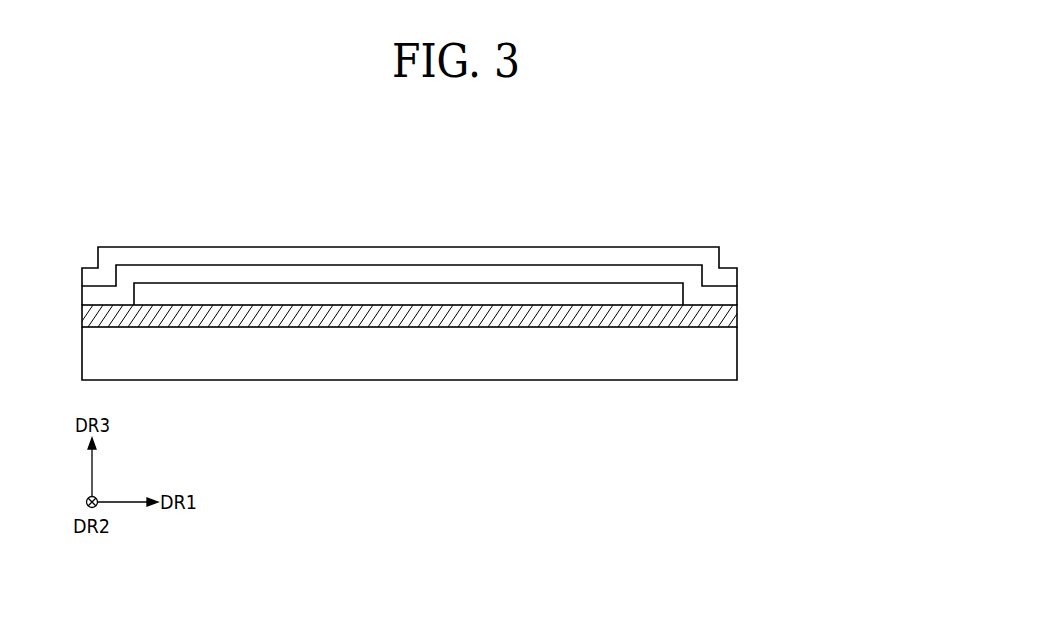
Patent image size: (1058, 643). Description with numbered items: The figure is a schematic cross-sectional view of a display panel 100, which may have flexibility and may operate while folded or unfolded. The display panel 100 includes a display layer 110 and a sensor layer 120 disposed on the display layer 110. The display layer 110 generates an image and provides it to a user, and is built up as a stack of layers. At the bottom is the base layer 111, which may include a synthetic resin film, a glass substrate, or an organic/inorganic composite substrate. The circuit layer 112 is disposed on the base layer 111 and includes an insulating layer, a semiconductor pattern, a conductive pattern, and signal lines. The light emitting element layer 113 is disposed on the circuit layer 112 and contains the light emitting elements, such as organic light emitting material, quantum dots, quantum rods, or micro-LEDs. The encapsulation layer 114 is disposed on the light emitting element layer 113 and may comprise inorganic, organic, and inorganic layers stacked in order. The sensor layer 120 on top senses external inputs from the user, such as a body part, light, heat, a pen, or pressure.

The display panel 100 is at (665, 203).
The display layer 110 is at (820, 267).
The base layer 111 is at (725, 353).
The circuit layer 112 is at (728, 317).
The light emitting element layer 113 is at (672, 295).
The encapsulation layer 114 is at (693, 281).
The sensor layer 120 is at (710, 257).